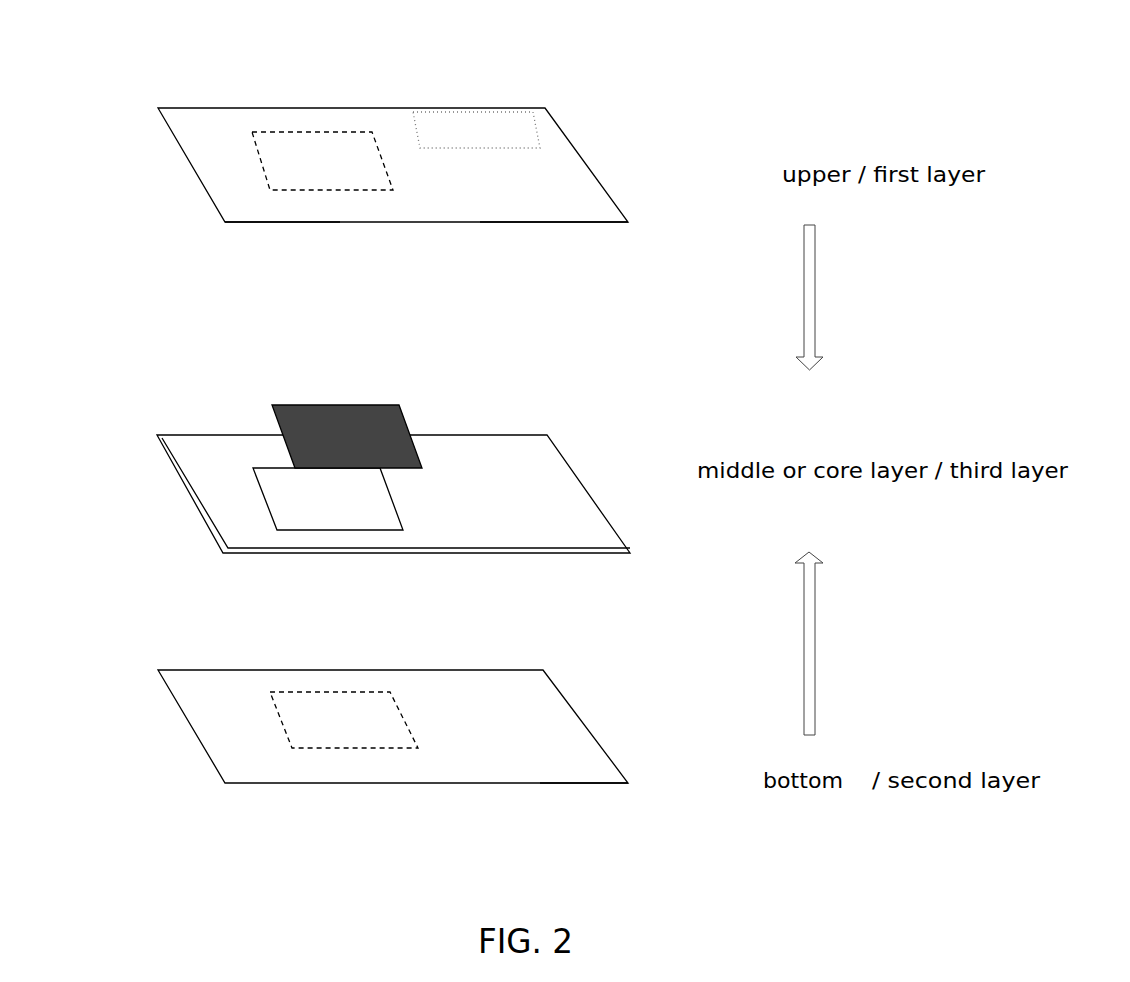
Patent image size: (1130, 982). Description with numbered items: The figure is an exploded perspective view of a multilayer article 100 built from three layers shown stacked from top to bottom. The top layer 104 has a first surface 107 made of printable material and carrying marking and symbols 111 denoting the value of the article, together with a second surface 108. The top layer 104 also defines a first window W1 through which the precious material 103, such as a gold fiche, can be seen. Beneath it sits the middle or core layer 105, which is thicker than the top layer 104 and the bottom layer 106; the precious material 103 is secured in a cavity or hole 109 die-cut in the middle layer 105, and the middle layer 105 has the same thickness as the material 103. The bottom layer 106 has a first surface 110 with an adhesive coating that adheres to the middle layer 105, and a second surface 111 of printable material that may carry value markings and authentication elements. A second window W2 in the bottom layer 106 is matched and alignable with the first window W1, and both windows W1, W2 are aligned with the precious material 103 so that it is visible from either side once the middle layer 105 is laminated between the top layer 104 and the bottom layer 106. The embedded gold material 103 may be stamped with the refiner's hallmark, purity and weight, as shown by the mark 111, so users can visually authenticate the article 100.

The multilayer article 100 is at (130, 130).
The precious material 103 is at (382, 403).
The top layer 104 is at (547, 155).
The middle layer 105 is at (540, 475).
The bottom layer 106 is at (553, 715).
The first surface 107 is at (512, 222).
The second surface 108 is at (290, 222).
The cavity or hole 109 is at (282, 512).
The first surface 110 is at (570, 777).
The marking and symbols 111 is at (490, 108).
The first window W1 is at (342, 132).
The second window W2 is at (342, 692).